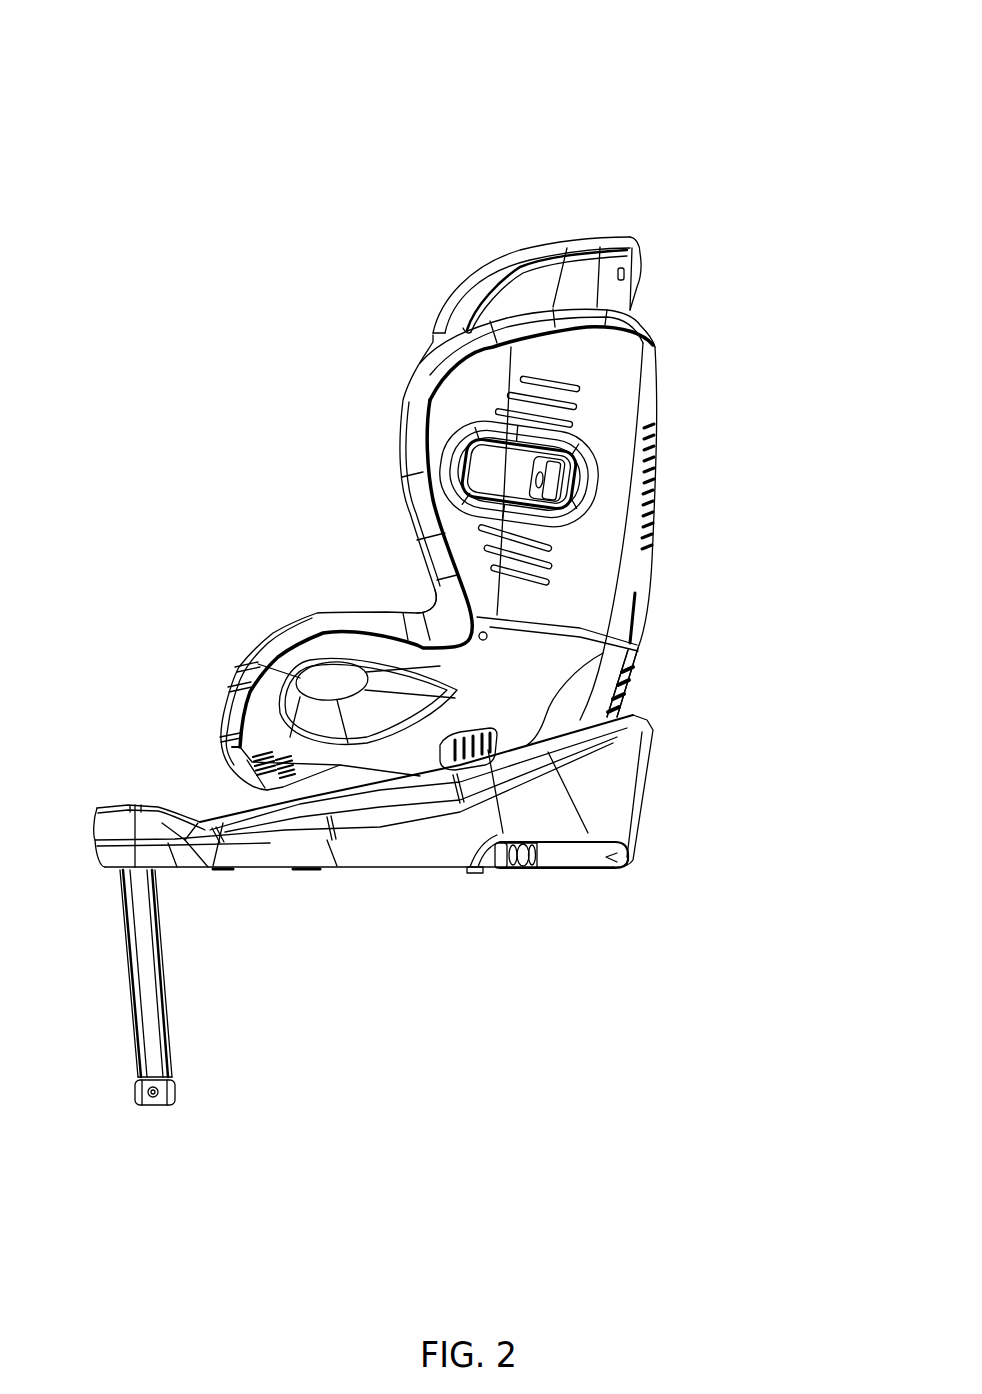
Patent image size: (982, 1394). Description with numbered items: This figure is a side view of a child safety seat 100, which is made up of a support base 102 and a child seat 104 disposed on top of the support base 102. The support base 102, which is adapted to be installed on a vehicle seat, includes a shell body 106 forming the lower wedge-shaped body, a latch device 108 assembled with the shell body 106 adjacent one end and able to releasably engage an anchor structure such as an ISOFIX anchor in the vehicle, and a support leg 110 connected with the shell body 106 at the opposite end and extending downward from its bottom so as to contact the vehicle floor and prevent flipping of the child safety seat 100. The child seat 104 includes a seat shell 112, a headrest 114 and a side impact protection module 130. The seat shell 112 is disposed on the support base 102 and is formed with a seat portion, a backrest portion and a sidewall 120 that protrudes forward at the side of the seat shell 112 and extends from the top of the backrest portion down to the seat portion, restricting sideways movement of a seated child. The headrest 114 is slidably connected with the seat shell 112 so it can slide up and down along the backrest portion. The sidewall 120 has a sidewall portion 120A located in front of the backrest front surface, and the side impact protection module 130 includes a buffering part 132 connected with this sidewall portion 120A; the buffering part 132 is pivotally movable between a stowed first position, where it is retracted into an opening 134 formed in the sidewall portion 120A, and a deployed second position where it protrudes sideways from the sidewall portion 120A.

The child safety seat 100 is at (111, 39).
The support base 102 is at (670, 807).
The child seat 104 is at (684, 522).
The shell body 106 is at (422, 853).
The latch device 108 is at (568, 857).
The support leg 110 is at (133, 997).
The seat shell 112 is at (567, 677).
The headrest 114 is at (560, 240).
The sidewall 120 is at (403, 385).
The sidewall portion 120A is at (438, 434).
The side impact protection module 130 is at (587, 437).
The buffering part 132 is at (553, 480).
The opening 134 is at (467, 480).